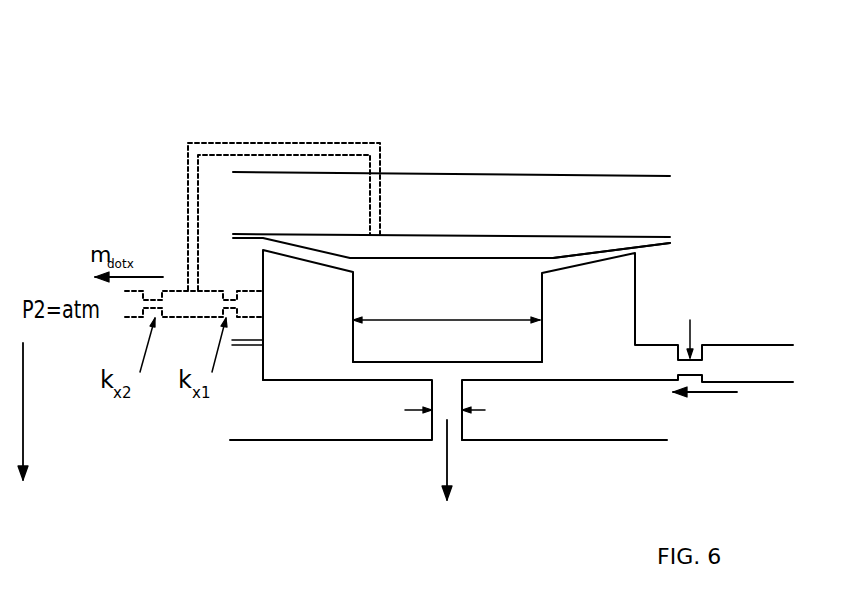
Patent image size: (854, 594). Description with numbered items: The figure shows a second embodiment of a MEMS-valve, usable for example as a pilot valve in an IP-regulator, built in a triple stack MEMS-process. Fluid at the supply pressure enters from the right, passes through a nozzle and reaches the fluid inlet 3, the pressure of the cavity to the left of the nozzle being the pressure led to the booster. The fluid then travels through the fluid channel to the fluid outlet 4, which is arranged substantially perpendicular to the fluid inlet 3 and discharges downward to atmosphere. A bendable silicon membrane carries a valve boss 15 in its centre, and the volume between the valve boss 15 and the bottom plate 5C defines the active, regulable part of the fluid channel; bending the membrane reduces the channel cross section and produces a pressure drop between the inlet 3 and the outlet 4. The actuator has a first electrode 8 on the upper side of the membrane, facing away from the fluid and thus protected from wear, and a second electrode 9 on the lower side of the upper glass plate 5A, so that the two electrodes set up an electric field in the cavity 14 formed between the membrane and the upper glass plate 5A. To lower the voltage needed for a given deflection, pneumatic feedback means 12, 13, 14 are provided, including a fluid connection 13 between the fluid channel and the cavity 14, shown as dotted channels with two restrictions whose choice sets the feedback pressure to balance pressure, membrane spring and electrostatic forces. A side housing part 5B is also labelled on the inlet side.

The fluid inlet 3 is at (528, 315).
The fluid outlet 4 is at (462, 440).
The upper glass plate 5A is at (451, 199).
The side housing part with inlet 5B is at (627, 364).
The bottom plate 5C is at (448, 434).
The first electrode 8 is at (555, 260).
The second electrode 9 is at (443, 228).
The pneumatic feedback means 12 is at (168, 258).
The fluid connection 13 is at (188, 143).
The cavity 14 is at (347, 248).
The valve boss 15 is at (507, 345).